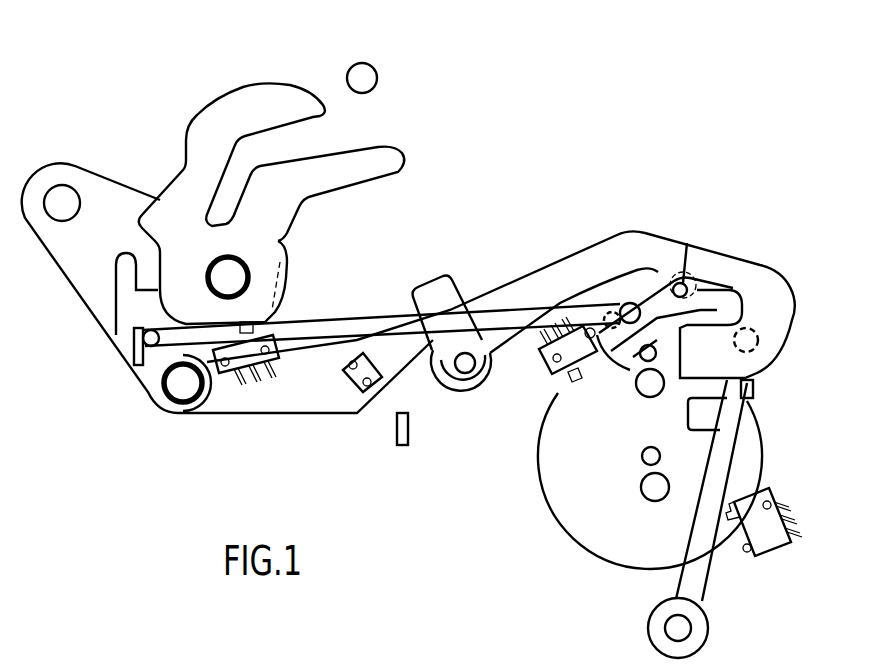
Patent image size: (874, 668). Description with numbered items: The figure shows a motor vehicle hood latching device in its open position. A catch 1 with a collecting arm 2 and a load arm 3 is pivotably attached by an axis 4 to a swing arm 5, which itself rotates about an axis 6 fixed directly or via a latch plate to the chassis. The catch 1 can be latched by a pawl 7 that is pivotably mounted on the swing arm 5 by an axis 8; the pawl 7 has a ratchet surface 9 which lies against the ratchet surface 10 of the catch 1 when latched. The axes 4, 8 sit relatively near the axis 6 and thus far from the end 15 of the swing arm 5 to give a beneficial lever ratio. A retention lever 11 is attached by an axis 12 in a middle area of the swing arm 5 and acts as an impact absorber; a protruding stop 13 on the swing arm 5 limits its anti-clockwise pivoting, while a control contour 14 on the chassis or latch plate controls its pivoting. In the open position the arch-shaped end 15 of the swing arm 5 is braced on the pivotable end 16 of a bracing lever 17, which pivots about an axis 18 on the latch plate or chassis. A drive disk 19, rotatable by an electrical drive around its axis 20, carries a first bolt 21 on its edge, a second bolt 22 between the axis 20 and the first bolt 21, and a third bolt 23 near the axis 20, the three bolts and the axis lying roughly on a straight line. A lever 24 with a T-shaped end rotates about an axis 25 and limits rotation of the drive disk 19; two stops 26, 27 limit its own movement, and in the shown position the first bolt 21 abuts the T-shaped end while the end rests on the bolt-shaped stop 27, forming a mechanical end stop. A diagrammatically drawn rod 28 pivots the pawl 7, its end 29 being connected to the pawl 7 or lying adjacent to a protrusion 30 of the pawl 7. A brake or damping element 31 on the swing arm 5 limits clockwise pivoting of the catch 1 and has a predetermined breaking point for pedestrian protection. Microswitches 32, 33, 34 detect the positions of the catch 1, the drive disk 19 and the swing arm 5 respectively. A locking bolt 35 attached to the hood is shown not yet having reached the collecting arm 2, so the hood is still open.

The catch 1 is at (192, 281).
The collecting arm 2 is at (384, 172).
The load arm 3 is at (268, 103).
The axis 4 is at (225, 277).
The swing arm 5 is at (548, 273).
The axis 6 is at (62, 198).
The pawl 7 is at (132, 308).
The axis 8 is at (185, 385).
The ratchet surface 9 is at (143, 290).
The ratchet surface 10 is at (247, 380).
The retention lever 11 is at (437, 298).
The axis 12 is at (465, 362).
The stop 13 is at (413, 332).
The control contour 14 is at (405, 447).
The arch-shaped end 15 is at (790, 302).
The pivotable end 16 is at (753, 397).
The bracing lever 17 is at (725, 455).
The axis 18 is at (685, 628).
The drive disk 19 is at (550, 470).
The axis 20 is at (647, 459).
The first bolt 21 is at (641, 357).
The second bolt 22 is at (645, 392).
The third bolt 23 is at (645, 490).
The lever with T-shaped end 24 is at (710, 312).
The axis 25 is at (677, 283).
The stop 26 is at (748, 338).
The stop 27 is at (610, 317).
The rod 28 is at (350, 313).
The end 29 is at (147, 340).
The protrusion 30 is at (138, 362).
The brake element 31 is at (363, 392).
The first microswitch 32 is at (257, 363).
The second microswitch 33 is at (547, 358).
The third microswitch 34 is at (777, 523).
The locking bolt 35 is at (362, 78).